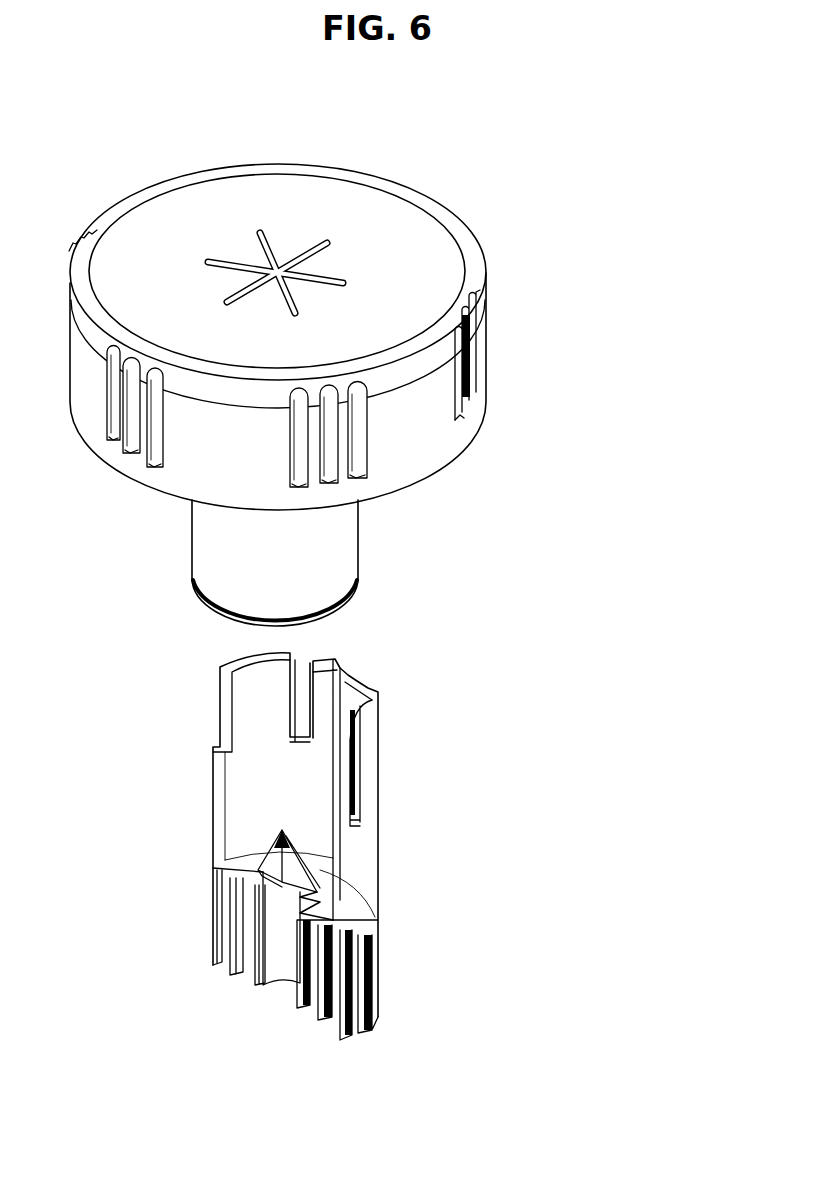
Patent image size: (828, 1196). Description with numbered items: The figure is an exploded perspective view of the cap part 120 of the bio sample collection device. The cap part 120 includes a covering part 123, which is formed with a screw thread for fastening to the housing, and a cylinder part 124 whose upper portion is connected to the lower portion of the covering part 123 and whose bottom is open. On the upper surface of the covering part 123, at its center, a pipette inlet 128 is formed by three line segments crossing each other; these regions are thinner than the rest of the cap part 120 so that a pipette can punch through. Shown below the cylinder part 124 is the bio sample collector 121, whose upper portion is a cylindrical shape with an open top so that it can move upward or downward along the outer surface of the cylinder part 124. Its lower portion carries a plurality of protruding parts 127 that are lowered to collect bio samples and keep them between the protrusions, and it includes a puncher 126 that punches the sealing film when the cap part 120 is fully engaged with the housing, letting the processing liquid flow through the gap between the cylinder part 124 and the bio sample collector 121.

The cap part 120 is at (612, 470).
The bio sample collector 121 is at (368, 795).
The covering part 123 is at (430, 423).
The cylinder part 124 is at (335, 545).
The puncher 126 is at (315, 872).
The protruding parts 127 is at (362, 975).
The pipette inlet 128 is at (300, 250).